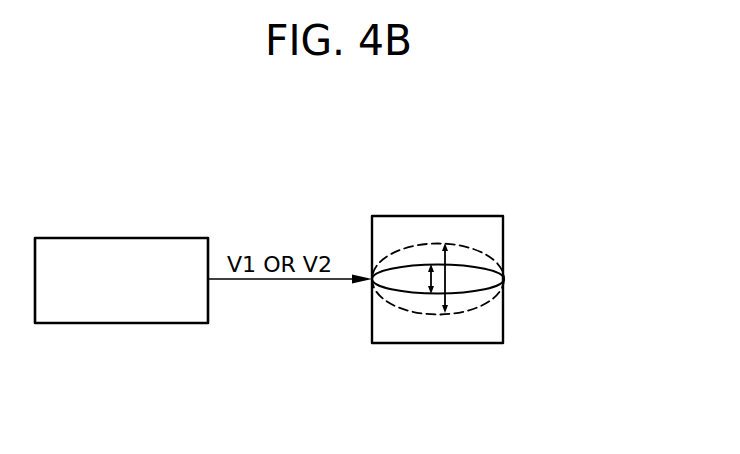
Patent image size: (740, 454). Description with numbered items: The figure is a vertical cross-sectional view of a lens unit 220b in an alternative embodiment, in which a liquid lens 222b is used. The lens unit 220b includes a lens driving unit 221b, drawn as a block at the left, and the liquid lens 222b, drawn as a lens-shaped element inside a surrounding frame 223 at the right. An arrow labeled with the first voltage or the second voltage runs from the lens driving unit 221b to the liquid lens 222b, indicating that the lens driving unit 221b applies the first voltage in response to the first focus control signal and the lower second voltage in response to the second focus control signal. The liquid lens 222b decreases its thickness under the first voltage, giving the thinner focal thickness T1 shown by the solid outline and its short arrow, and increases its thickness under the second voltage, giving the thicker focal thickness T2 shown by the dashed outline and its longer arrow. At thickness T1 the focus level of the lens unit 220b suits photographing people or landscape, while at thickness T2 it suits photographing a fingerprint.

The lens unit 220b is at (514, 246).
The lens driving unit 221b is at (127, 238).
The liquid lens 222b is at (460, 262).
The lens housing 223 is at (478, 216).
The thinner focal thickness T1 is at (430, 281).
The thicker focal thickness T2 is at (446, 283).